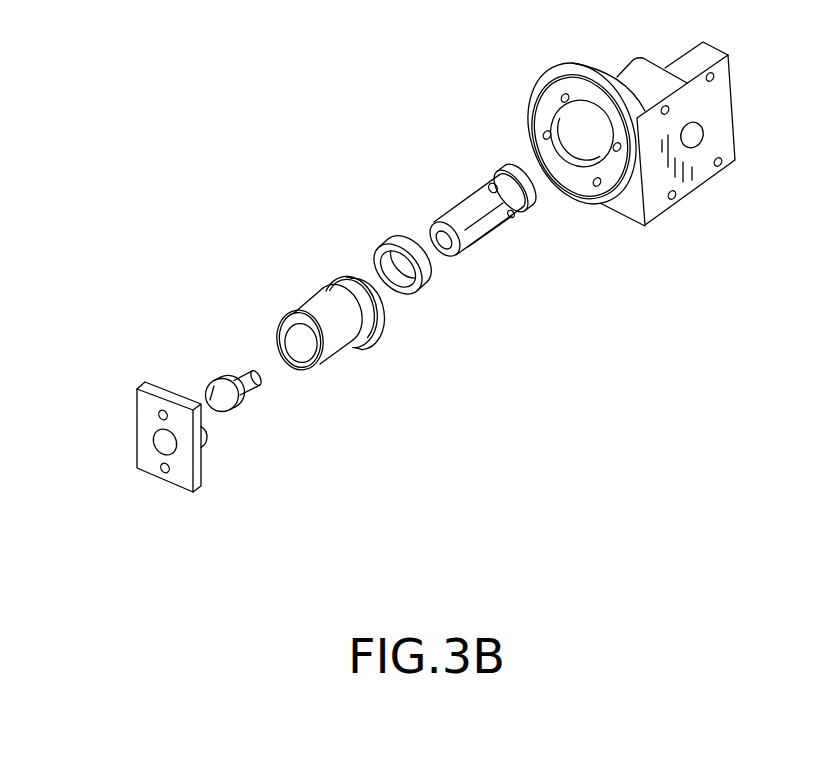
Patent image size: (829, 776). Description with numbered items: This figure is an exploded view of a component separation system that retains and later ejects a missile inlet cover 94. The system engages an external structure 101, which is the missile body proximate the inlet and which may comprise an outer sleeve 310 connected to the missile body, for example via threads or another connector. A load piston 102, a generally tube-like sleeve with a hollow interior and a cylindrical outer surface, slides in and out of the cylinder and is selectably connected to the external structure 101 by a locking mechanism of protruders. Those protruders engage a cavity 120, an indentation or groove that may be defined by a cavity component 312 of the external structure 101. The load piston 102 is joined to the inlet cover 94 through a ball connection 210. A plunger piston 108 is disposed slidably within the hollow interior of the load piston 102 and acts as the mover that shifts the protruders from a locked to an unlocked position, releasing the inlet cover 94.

The external structure 101 is at (534, 113).
The load piston 102 is at (475, 237).
The plunger piston 108 is at (523, 208).
The cavity 120 is at (389, 245).
The cavity component 312 is at (427, 288).
The outer sleeve 310 is at (295, 302).
The inlet cover 94 is at (137, 387).
The ball connection 210 is at (215, 383).